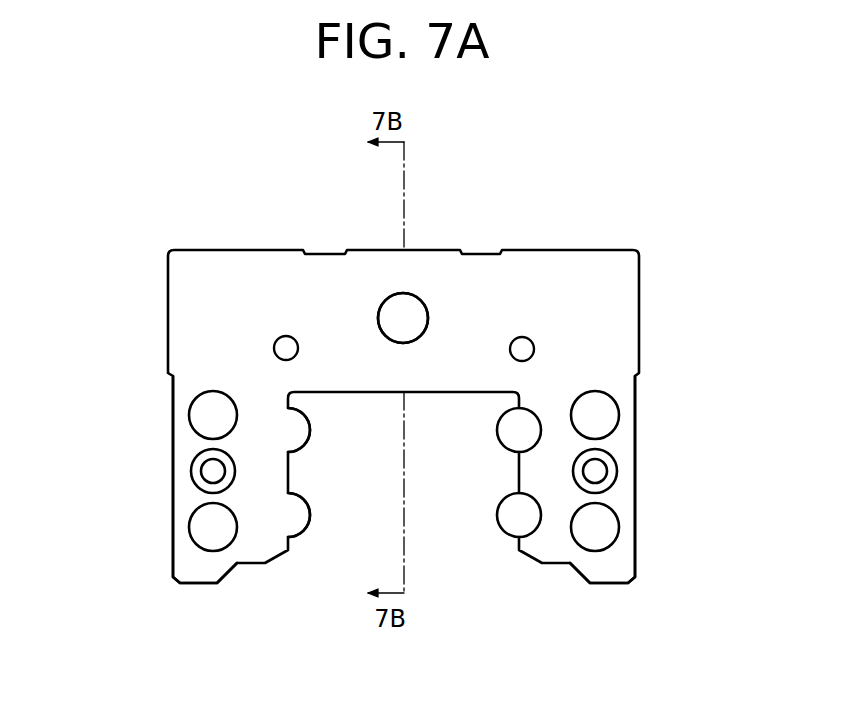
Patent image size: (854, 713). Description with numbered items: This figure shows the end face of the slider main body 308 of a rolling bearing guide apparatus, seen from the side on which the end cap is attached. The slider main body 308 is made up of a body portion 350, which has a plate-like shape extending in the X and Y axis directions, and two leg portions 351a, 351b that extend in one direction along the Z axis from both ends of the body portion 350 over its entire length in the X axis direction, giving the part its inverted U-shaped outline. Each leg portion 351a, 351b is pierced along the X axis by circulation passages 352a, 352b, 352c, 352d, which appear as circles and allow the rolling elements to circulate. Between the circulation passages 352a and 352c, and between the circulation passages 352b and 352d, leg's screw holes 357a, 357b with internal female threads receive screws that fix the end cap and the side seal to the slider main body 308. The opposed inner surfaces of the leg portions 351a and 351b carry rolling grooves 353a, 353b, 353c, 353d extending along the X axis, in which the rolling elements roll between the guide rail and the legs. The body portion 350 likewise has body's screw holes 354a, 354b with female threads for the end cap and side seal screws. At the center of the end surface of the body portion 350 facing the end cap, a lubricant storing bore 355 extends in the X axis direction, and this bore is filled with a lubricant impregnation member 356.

The slider main body 308 is at (296, 187).
The body portion 350 is at (505, 283).
The leg portion 351a is at (202, 573).
The leg portion 351b is at (608, 573).
The circulation passage 352a is at (237, 417).
The circulation passage 352b is at (572, 417).
The circulation passage 352c is at (237, 535).
The circulation passage 352d is at (572, 535).
The rolling groove 353a is at (268, 428).
The rolling groove 353b is at (540, 430).
The rolling groove 353c is at (268, 513).
The rolling groove 353d is at (540, 515).
The body's screw hole 354a is at (288, 358).
The body's screw hole 354b is at (518, 358).
The lubricant storing bore 355 is at (400, 342).
The lubricant impregnation member 356 is at (398, 310).
The leg's screw hole 357a is at (217, 470).
The leg's screw hole 357b is at (583, 470).